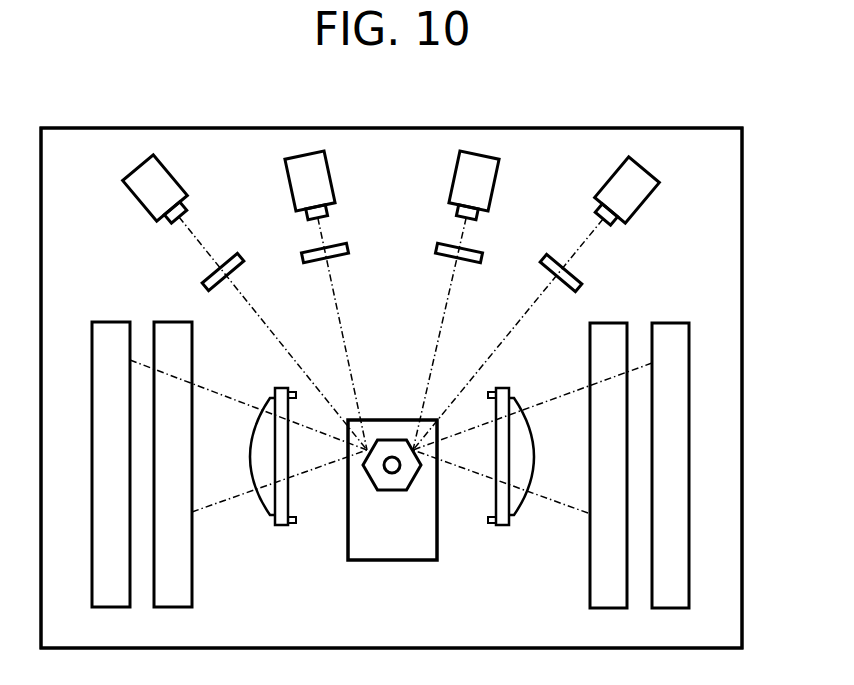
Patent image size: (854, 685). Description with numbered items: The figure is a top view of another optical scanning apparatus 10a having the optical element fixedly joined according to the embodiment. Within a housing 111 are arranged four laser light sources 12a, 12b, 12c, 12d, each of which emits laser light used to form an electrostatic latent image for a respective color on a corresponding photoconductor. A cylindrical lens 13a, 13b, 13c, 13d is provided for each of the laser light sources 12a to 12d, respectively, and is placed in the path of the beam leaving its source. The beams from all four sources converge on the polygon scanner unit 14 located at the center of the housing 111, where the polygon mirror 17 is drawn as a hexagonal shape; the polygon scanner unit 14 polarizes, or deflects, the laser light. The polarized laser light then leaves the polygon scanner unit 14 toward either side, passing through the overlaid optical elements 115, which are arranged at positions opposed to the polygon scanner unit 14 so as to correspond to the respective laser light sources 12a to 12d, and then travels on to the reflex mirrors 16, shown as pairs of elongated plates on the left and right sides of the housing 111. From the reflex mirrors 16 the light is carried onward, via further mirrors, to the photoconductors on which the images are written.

The optical scanning apparatus 10a is at (586, 111).
The housing 111 is at (704, 128).
The laser light source 12a is at (138, 203).
The laser light source 12b is at (285, 176).
The laser light source 12c is at (499, 176).
The laser light source 12d is at (646, 205).
The cylindrical lens 13a is at (208, 274).
The cylindrical lens 13b is at (310, 252).
The cylindrical lens 13c is at (480, 250).
The cylindrical lens 13d is at (578, 275).
The polygon scanner unit 14 is at (382, 562).
The reflex mirrors 16 is at (110, 322).
The polygon mirror 17 is at (392, 491).
The optical elements 115 is at (278, 527).